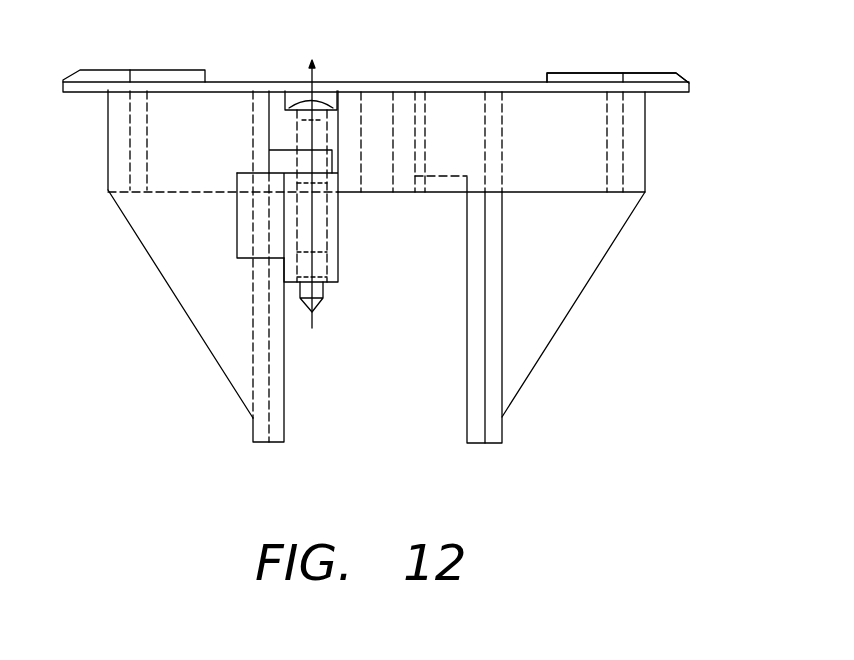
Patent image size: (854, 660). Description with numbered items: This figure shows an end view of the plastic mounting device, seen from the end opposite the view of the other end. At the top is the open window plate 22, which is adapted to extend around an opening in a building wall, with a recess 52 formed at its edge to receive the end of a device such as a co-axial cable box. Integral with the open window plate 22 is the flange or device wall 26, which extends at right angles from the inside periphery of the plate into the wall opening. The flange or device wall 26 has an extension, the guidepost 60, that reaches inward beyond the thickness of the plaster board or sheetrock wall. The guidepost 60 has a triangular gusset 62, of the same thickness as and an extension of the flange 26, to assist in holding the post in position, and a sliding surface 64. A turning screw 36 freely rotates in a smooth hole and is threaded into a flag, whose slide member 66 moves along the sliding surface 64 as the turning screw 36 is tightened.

The open window plate 22 is at (680, 74).
The flange or device wall 26 is at (645, 147).
The turning screw 36 is at (320, 83).
The recess 52 is at (547, 82).
The guidepost 60 is at (230, 301).
The triangular gusset 62 is at (158, 272).
The sliding surface 64 is at (268, 406).
The slide member 66 is at (237, 213).